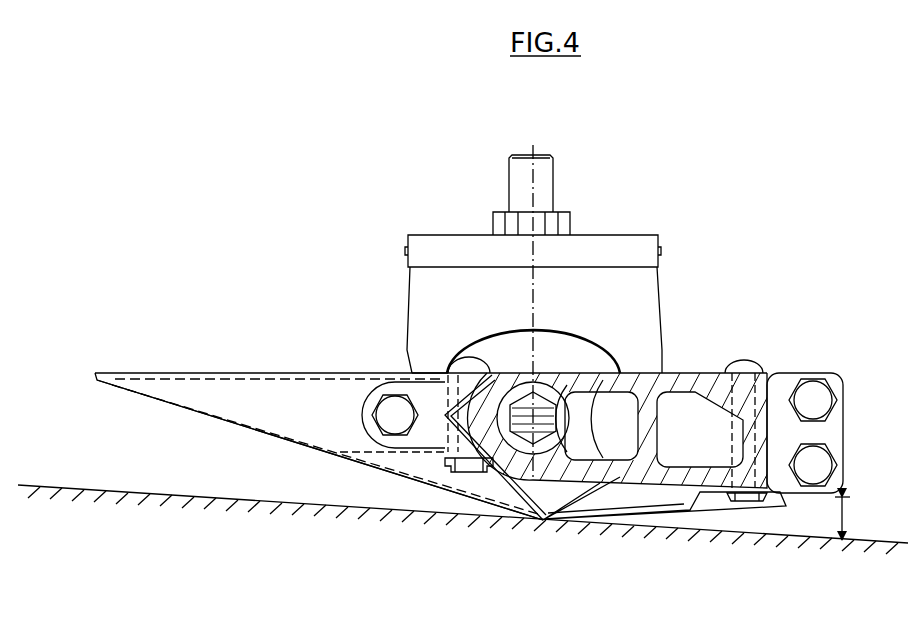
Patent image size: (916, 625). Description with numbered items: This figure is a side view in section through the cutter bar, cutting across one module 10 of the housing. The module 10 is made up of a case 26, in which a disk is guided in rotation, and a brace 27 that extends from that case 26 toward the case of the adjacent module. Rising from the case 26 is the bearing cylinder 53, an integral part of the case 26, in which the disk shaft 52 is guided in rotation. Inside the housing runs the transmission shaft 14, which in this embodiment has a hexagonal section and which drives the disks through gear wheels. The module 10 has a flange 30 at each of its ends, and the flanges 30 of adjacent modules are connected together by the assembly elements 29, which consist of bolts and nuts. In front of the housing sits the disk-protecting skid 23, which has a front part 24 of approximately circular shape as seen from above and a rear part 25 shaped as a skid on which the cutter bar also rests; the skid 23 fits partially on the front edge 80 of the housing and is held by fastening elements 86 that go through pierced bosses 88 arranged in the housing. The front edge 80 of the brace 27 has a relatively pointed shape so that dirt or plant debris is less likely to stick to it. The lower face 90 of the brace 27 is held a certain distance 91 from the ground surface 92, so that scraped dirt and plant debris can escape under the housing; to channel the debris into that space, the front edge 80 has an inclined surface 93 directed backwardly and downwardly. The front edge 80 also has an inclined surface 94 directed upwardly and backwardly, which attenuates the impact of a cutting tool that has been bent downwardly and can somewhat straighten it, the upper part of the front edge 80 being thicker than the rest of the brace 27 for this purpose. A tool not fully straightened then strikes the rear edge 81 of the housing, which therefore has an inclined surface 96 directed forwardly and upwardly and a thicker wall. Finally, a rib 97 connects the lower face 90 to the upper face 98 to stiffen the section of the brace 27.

The module 10 is at (682, 317).
The transmission shaft 14 is at (630, 430).
The disk-protecting skid 23 is at (133, 398).
The front part 24 is at (130, 372).
The rear part 25 is at (643, 508).
The case 26 is at (664, 255).
The brace 27 is at (628, 371).
The assembly elements 29 is at (372, 403).
The flange 30 is at (810, 375).
The disk shaft 52 is at (525, 177).
The bearing cylinder 53 is at (415, 291).
The front edge 80 is at (443, 412).
The rear edge 81 is at (760, 437).
The fastening elements 86 is at (468, 370).
The pierced bosses 88 is at (445, 440).
The lower face 90 is at (607, 487).
The distance 91 is at (846, 522).
The ground surface 92 is at (474, 581).
The inclined surface 93 is at (543, 478).
The inclined surface 94 is at (478, 440).
The inclined surface 96 is at (718, 374).
The rib 97 is at (648, 447).
The upper face 98 is at (658, 370).